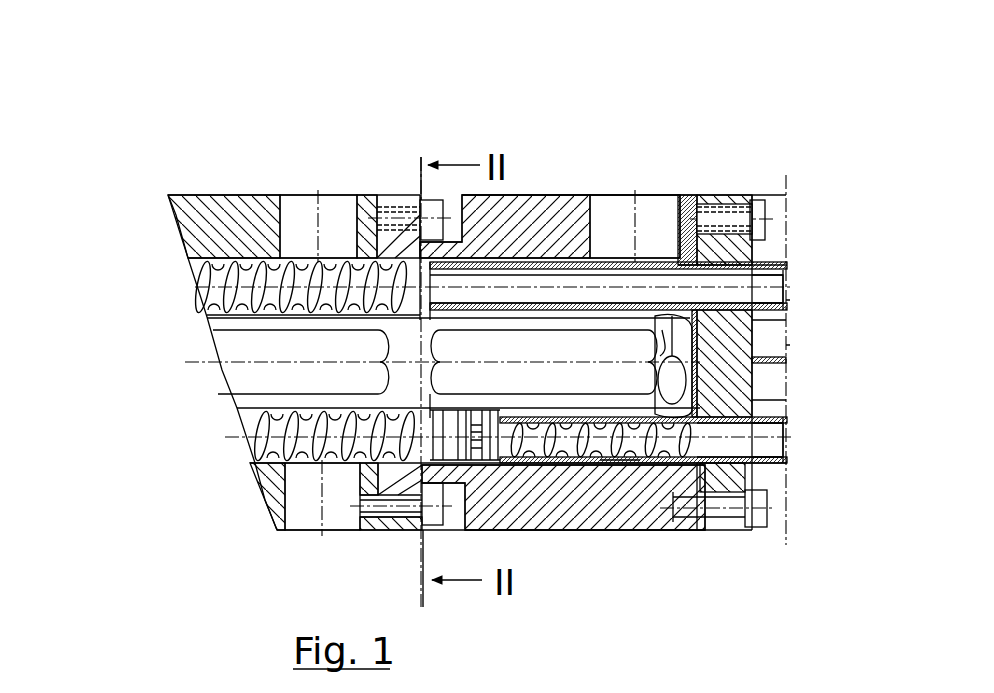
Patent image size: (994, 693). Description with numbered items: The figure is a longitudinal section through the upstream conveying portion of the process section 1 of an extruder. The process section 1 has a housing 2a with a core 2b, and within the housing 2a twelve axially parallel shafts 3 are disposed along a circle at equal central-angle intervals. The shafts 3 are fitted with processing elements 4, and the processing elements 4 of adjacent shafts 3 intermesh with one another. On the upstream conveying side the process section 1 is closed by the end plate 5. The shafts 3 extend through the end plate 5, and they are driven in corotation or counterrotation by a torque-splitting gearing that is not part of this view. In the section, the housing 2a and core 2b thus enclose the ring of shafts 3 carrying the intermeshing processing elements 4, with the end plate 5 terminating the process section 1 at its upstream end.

The process section 1 is at (113, 152).
The housing 2a is at (253, 195).
The core 2b is at (548, 382).
The shafts 3 is at (773, 296).
The processing elements 4 is at (677, 322).
The end plate 5 is at (722, 532).